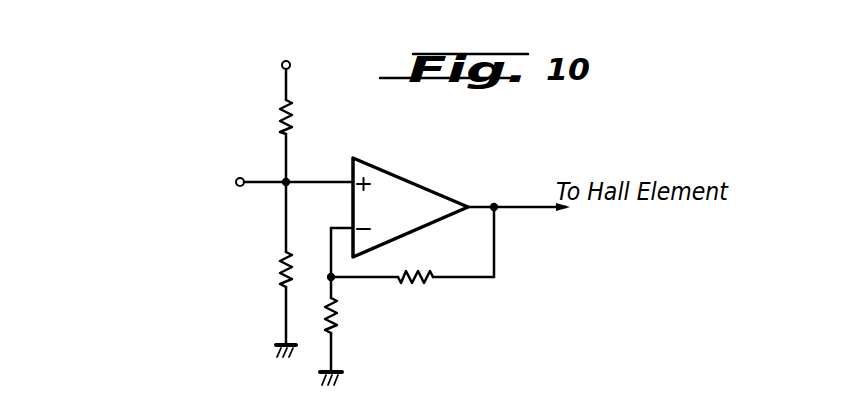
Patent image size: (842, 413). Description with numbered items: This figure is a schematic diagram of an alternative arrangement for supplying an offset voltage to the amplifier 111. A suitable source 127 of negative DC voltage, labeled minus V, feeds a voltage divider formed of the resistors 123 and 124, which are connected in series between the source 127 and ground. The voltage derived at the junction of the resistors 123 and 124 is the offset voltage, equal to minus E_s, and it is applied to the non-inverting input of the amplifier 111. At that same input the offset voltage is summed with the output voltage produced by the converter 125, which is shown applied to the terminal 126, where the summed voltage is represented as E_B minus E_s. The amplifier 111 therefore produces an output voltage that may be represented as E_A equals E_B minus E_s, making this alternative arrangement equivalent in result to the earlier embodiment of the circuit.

The amplifier 111 is at (405, 170).
The resistor 123 is at (295, 124).
The resistor 124 is at (280, 278).
The converter 125 is at (130, 184).
The terminal 126 is at (241, 186).
The source of negative DC voltage 127 is at (287, 61).